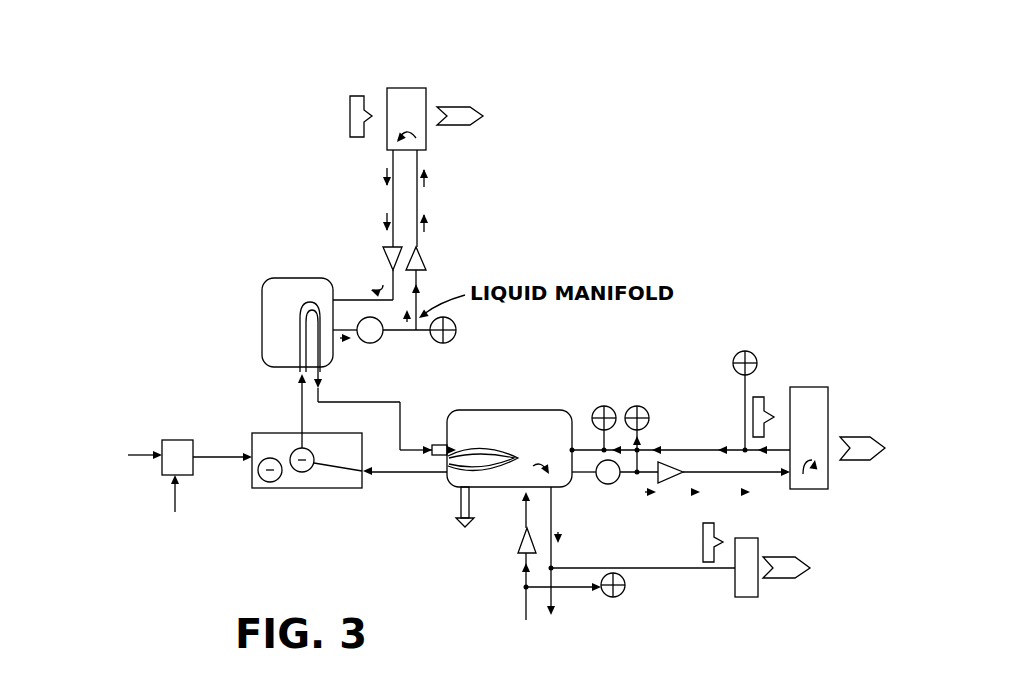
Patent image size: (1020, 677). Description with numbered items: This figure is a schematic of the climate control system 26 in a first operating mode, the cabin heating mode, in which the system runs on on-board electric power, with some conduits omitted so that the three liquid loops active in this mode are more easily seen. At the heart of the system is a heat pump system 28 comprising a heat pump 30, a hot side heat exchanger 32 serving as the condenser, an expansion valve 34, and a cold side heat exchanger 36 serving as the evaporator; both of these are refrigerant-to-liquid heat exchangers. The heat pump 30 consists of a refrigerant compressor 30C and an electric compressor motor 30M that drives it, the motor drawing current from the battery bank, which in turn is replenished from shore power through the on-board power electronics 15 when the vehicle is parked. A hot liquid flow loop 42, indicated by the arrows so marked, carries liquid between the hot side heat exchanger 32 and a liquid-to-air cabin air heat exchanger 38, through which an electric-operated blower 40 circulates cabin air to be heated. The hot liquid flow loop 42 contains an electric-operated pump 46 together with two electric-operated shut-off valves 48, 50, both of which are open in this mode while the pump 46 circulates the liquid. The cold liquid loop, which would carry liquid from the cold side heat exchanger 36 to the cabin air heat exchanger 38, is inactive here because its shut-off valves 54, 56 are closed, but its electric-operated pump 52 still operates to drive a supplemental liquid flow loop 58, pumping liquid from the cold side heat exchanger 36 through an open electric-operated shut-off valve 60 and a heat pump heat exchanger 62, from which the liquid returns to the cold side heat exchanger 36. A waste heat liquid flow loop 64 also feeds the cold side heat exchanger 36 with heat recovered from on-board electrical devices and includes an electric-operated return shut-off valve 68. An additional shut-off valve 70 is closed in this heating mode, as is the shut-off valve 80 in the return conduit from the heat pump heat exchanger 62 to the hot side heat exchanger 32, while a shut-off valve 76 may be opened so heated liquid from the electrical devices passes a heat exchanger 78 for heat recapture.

The on-board power electronics 15 is at (172, 440).
The climate control system 26 is at (256, 180).
The heat pump system 28 is at (292, 494).
The heat pump 30 is at (252, 488).
The electric compressor motor 30M is at (271, 458).
The refrigerant compressor 30C is at (312, 468).
The hot side heat exchanger 32 is at (262, 300).
The expansion valve 34 is at (440, 445).
The cold side heat exchanger 36 is at (497, 410).
The cabin air heat exchanger 38 is at (420, 90).
The electric-operated blower 40 is at (362, 96).
The hot liquid flow loop 42 is at (355, 286).
The electric-operated pump 46 is at (371, 344).
The shut-off valve 48 is at (428, 262).
The shut-off valve 50 is at (371, 282).
The electric-operated pump 52 is at (608, 485).
The shut-off valve 54 is at (640, 406).
The shut-off valve 56 is at (600, 406).
The supplemental liquid flow loop 58 is at (658, 444).
The electric-operated shut-off valve 60 is at (671, 484).
The heat pump heat exchanger 62 is at (800, 387).
The waste heat liquid flow loop 64 is at (561, 538).
The electric-operated return shut-off valve 68 is at (518, 553).
The electric-operated shut-off valve 70 is at (452, 340).
The electric-operated shut-off valve 76 is at (620, 595).
The heat exchanger 78 is at (758, 590).
The electric-operated shut-off valve 80 is at (752, 353).